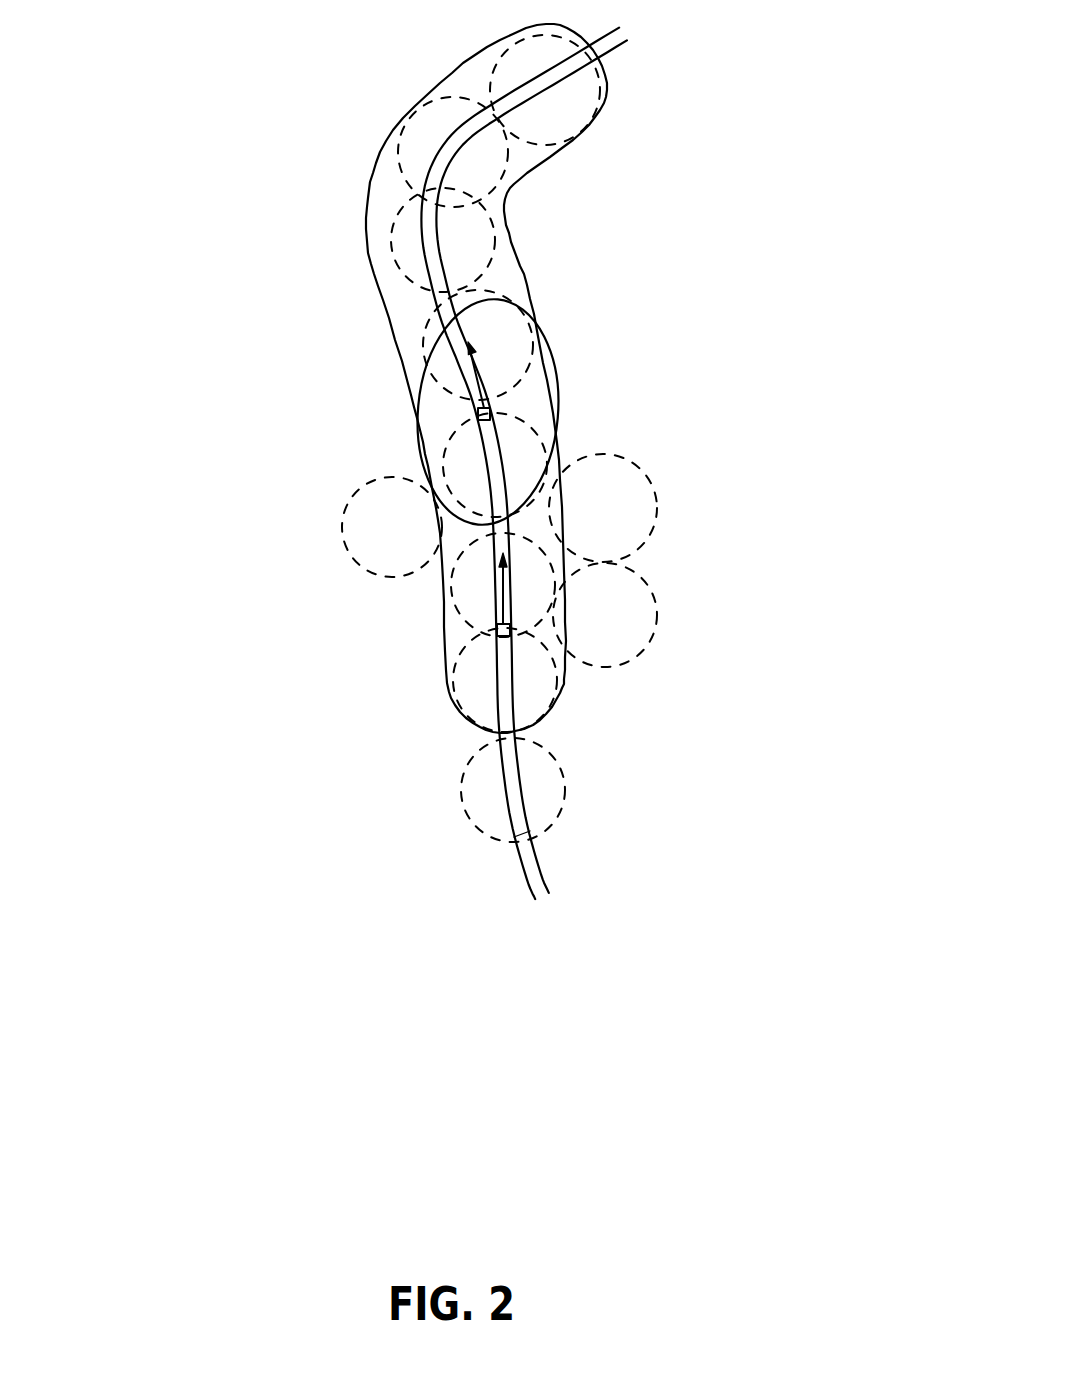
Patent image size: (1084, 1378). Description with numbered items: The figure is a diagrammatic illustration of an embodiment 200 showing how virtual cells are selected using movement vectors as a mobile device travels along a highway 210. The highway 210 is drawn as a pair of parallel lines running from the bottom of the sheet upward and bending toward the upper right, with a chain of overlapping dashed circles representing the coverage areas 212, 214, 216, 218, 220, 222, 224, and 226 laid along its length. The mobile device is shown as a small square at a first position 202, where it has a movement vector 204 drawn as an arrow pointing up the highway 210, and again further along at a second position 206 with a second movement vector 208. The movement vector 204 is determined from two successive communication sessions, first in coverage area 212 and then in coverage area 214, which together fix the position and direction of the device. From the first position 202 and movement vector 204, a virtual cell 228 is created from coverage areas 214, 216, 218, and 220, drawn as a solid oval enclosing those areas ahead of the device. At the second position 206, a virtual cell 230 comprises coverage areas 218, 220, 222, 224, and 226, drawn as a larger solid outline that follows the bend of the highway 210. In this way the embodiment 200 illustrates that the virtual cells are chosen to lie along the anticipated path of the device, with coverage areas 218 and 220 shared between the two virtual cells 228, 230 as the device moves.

The embodiment 200 is at (678, 977).
The first position 202 is at (512, 634).
The movement vector 204 is at (511, 627).
The second position 206 is at (478, 416).
The second movement vector 208 is at (477, 372).
The highway 210 is at (520, 874).
The coverage area 212 is at (457, 780).
The coverage area 214 is at (453, 682).
The coverage area 216 is at (460, 600).
The coverage area 218 is at (522, 417).
The coverage area 220 is at (526, 340).
The coverage area 222 is at (390, 233).
The coverage area 224 is at (397, 153).
The coverage area 226 is at (490, 64).
The virtual cell 228 is at (560, 498).
The virtual cell 230 is at (600, 130).